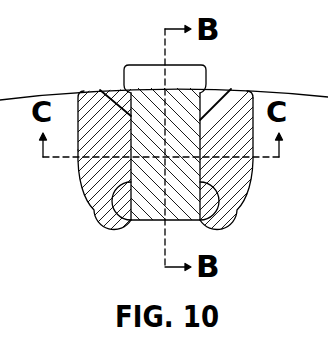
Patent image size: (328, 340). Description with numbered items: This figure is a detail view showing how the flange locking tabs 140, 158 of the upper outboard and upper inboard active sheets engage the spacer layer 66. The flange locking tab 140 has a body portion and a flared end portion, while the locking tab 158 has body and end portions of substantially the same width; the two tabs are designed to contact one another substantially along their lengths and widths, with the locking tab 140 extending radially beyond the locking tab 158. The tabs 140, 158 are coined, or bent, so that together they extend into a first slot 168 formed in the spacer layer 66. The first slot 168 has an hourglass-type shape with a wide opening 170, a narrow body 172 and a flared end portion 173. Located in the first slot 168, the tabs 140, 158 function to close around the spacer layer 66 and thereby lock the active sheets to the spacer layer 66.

The spacer layer 66 is at (91, 90).
The flange locking tab 140 is at (204, 71).
The locking tab 158 is at (198, 110).
The first slot 168 is at (118, 94).
The wide opening 170 is at (114, 103).
The narrow body 172 is at (201, 133).
The flared end portion 173 is at (218, 200).